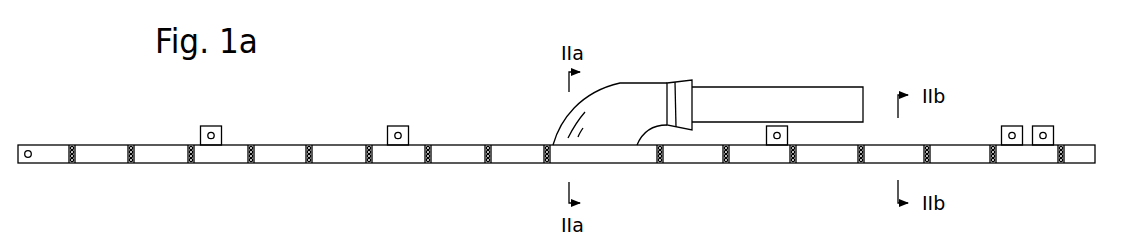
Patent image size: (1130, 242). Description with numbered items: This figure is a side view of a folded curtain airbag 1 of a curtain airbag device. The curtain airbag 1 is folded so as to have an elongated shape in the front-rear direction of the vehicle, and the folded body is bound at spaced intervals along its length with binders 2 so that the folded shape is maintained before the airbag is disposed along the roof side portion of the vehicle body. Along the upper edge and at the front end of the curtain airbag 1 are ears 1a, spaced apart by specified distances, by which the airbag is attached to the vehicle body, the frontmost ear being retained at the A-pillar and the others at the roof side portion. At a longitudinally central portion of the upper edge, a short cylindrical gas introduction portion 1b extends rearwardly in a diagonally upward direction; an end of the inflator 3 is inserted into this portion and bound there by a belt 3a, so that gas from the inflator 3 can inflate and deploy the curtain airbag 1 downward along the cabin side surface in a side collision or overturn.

The curtain airbag 1 is at (338, 142).
The ears 1a is at (24, 144).
The gas introduction portion 1b is at (621, 82).
The binders 2 is at (569, 179).
The inflator 3 is at (834, 87).
The belt 3a is at (676, 80).